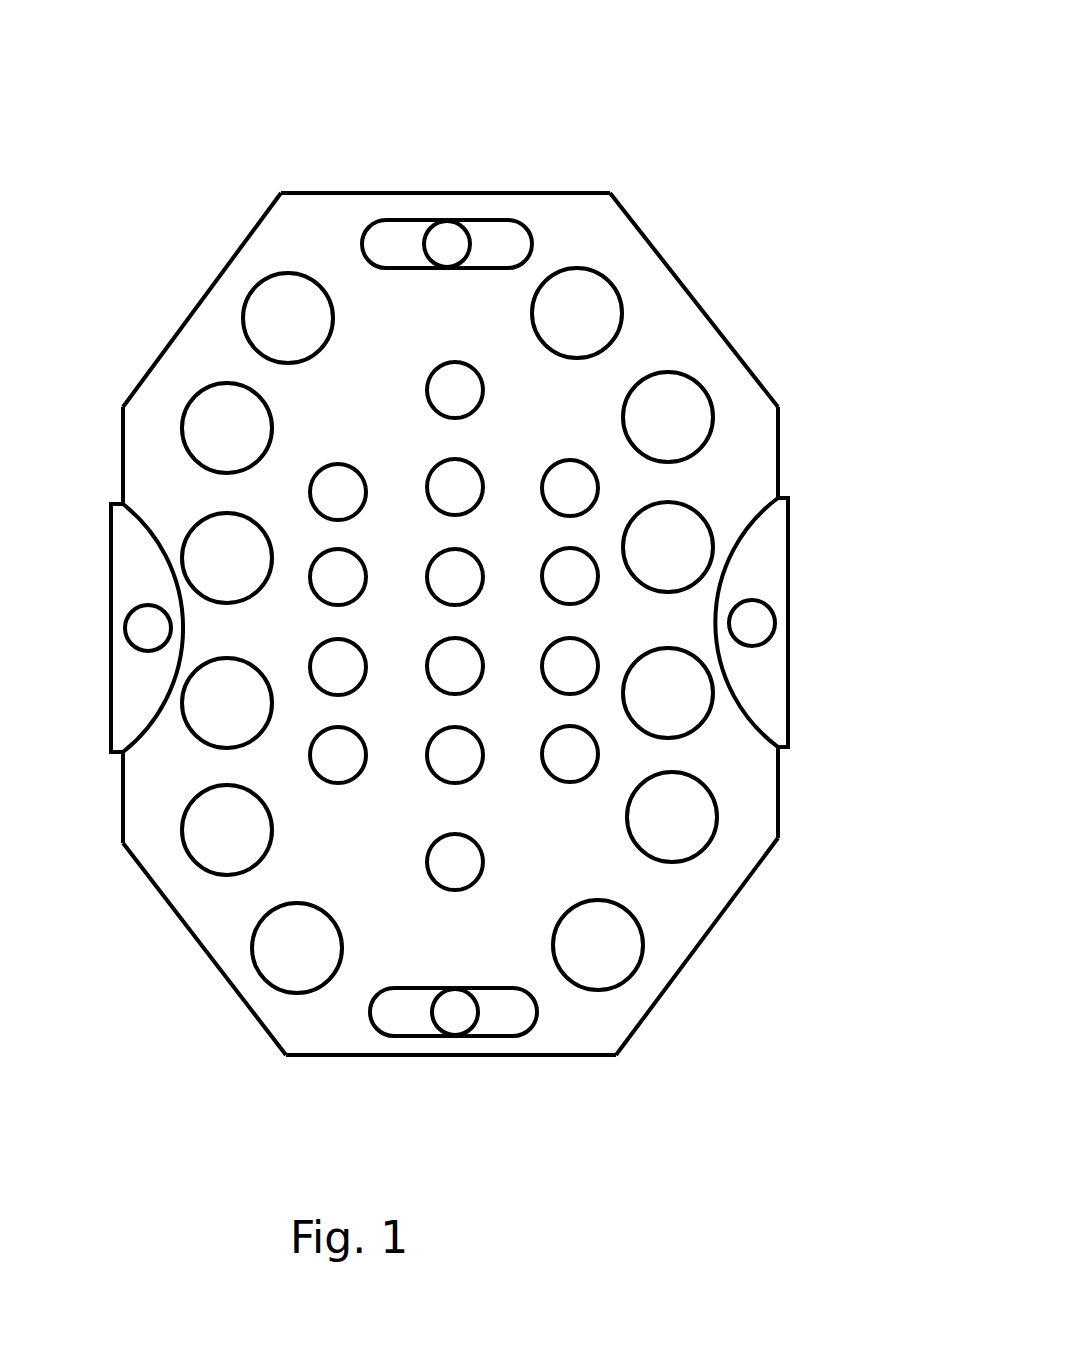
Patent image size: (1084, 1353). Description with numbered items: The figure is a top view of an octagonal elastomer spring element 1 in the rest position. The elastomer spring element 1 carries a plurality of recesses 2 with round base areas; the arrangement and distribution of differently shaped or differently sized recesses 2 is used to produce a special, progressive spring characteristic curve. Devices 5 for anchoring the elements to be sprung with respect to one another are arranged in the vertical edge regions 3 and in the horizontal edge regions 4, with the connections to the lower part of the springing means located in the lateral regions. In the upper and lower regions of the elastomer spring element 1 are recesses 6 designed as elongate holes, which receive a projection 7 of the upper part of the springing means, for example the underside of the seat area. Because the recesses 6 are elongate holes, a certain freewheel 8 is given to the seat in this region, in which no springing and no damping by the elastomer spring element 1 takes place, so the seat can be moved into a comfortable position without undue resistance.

The elastomer spring element 1 is at (810, 150).
The recesses 2 is at (322, 453).
The vertical edge regions 3 is at (778, 435).
The horizontal edge regions 4 is at (300, 192).
The devices for anchoring 5 is at (790, 648).
The recesses 6 is at (530, 230).
The projection 7 is at (470, 237).
The freewheel 8 is at (400, 242).